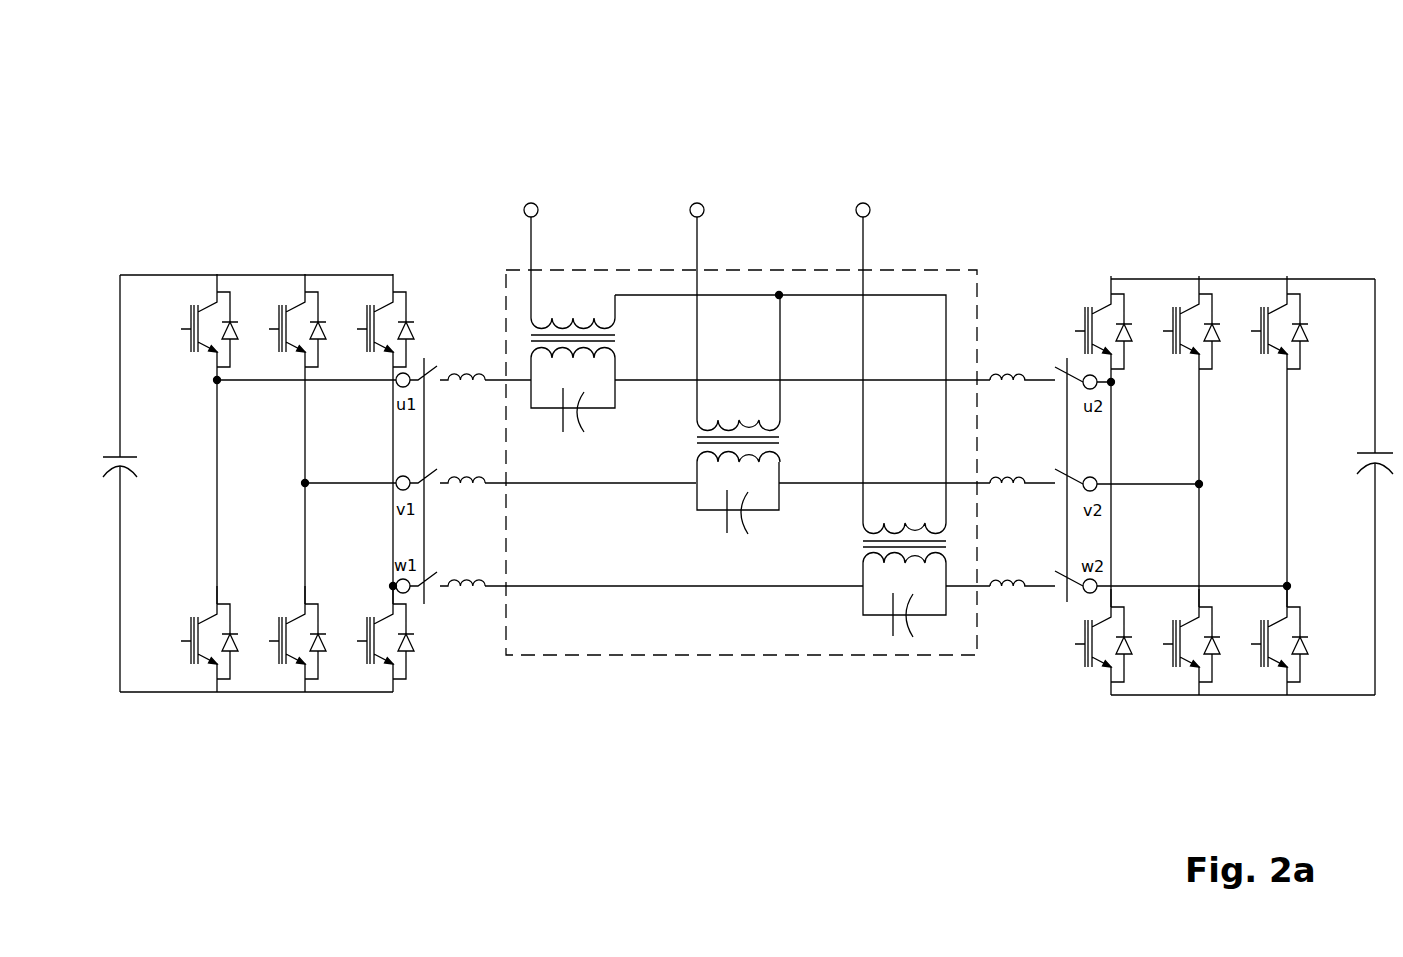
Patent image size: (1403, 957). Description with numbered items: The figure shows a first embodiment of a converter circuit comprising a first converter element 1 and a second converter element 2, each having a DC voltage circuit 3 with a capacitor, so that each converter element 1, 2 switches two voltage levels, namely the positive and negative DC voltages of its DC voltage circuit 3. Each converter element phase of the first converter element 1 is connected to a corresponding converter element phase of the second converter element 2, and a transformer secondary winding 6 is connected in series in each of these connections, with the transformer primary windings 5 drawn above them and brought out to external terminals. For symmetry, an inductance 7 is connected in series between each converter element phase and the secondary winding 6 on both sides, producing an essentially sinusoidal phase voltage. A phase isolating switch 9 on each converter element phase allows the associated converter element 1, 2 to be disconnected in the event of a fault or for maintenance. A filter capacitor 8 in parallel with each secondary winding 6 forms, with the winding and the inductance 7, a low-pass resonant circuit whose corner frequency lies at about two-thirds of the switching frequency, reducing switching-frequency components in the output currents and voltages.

The first converter element 1 is at (251, 298).
The second converter element 2 is at (1240, 322).
The DC voltage circuit 3 is at (131, 430).
The transformer primary winding 5 is at (552, 316).
The secondary winding 6 is at (585, 350).
The inductance 7 is at (455, 376).
The filter capacitor 8 is at (580, 392).
The phase isolating switch 9 is at (424, 357).